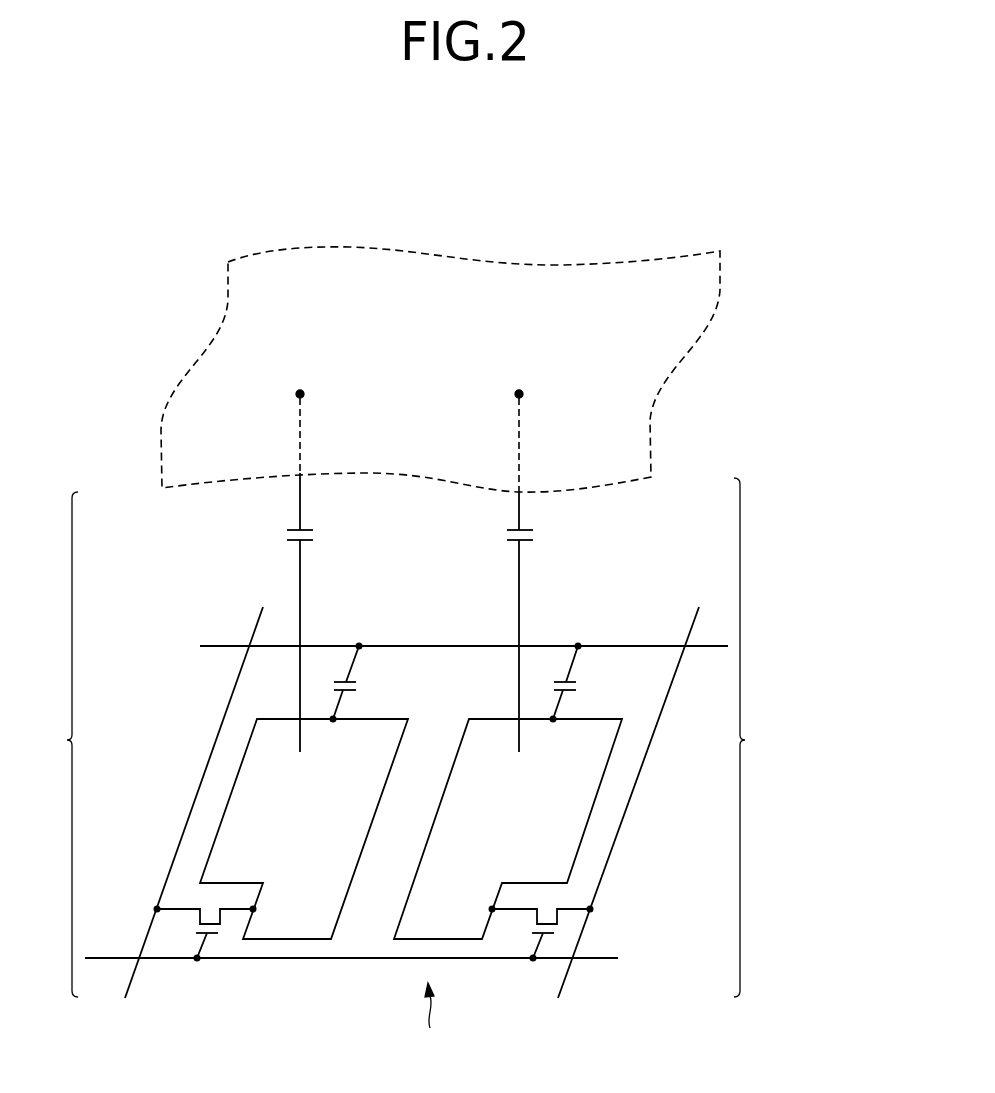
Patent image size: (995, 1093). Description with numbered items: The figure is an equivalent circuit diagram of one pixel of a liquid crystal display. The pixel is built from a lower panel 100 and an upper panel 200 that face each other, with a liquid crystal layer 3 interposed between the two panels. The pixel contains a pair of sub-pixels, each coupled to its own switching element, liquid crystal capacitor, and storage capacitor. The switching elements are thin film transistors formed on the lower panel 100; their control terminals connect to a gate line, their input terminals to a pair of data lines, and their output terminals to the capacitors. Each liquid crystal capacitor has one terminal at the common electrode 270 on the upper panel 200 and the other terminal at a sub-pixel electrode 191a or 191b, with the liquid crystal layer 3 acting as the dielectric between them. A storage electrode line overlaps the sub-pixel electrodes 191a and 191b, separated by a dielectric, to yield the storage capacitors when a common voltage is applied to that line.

The common electrode 270 is at (710, 315).
The upper panel 200 is at (511, 369).
The liquid crystal layer 3 is at (810, 506).
The lower panel 100 is at (454, 771).
The sub-pixel electrode 191a is at (290, 939).
The sub-pixel electrode 191b is at (595, 797).